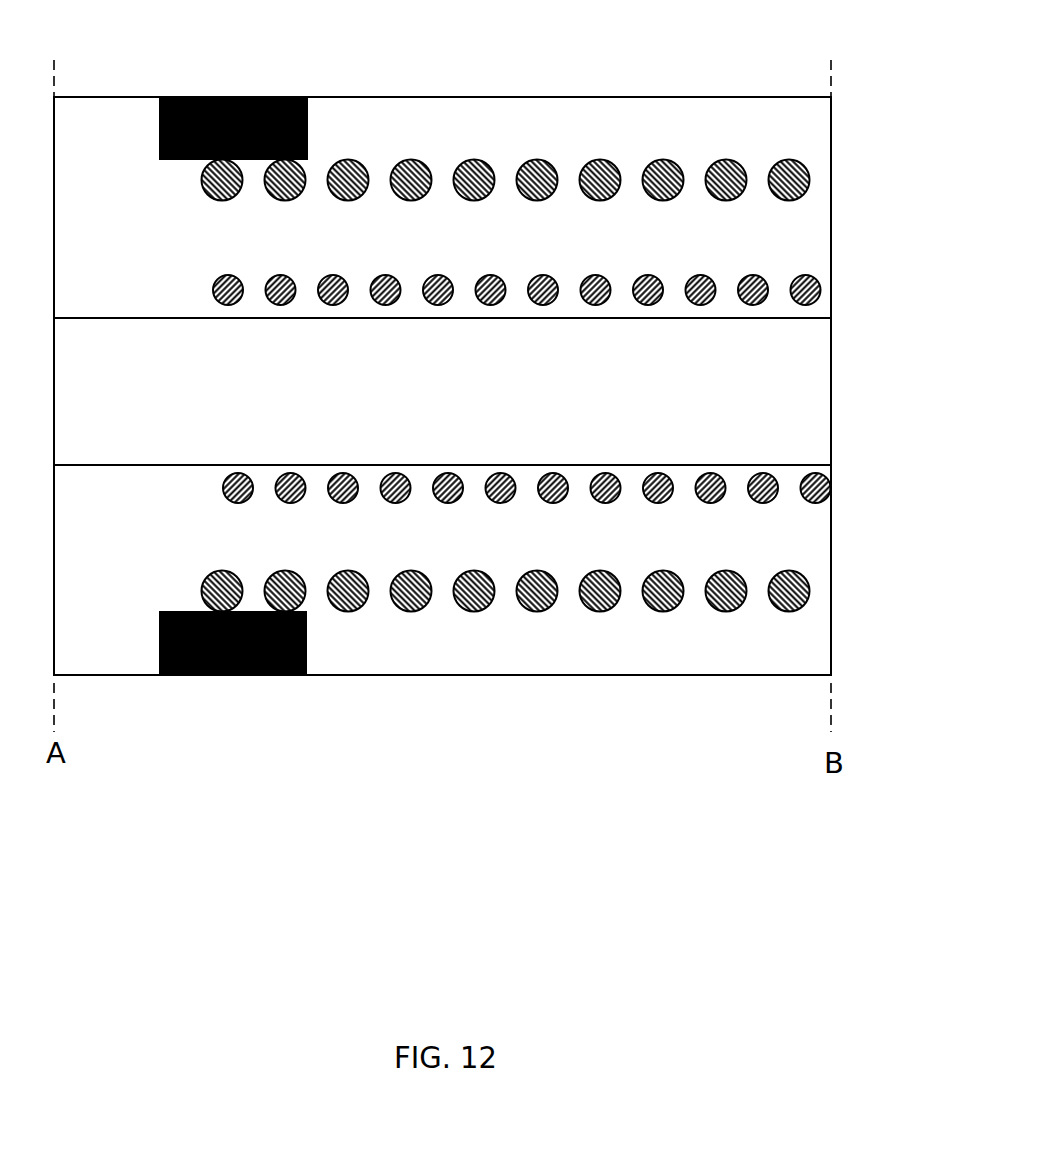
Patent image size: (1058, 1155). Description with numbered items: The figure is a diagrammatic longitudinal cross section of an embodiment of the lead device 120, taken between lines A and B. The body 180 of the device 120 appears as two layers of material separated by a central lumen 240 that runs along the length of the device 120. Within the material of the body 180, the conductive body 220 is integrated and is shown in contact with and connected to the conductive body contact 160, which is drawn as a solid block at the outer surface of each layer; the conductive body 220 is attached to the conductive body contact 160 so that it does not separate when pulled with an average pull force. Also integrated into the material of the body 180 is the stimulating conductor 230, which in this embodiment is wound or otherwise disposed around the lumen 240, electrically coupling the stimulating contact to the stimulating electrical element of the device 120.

The device 120 is at (199, 887).
The conductive body contact 160 is at (247, 97).
The body 180 is at (811, 117).
The conductive body 220 is at (600, 165).
The stimulating conductor 230 is at (810, 283).
The lumen 240 is at (810, 347).